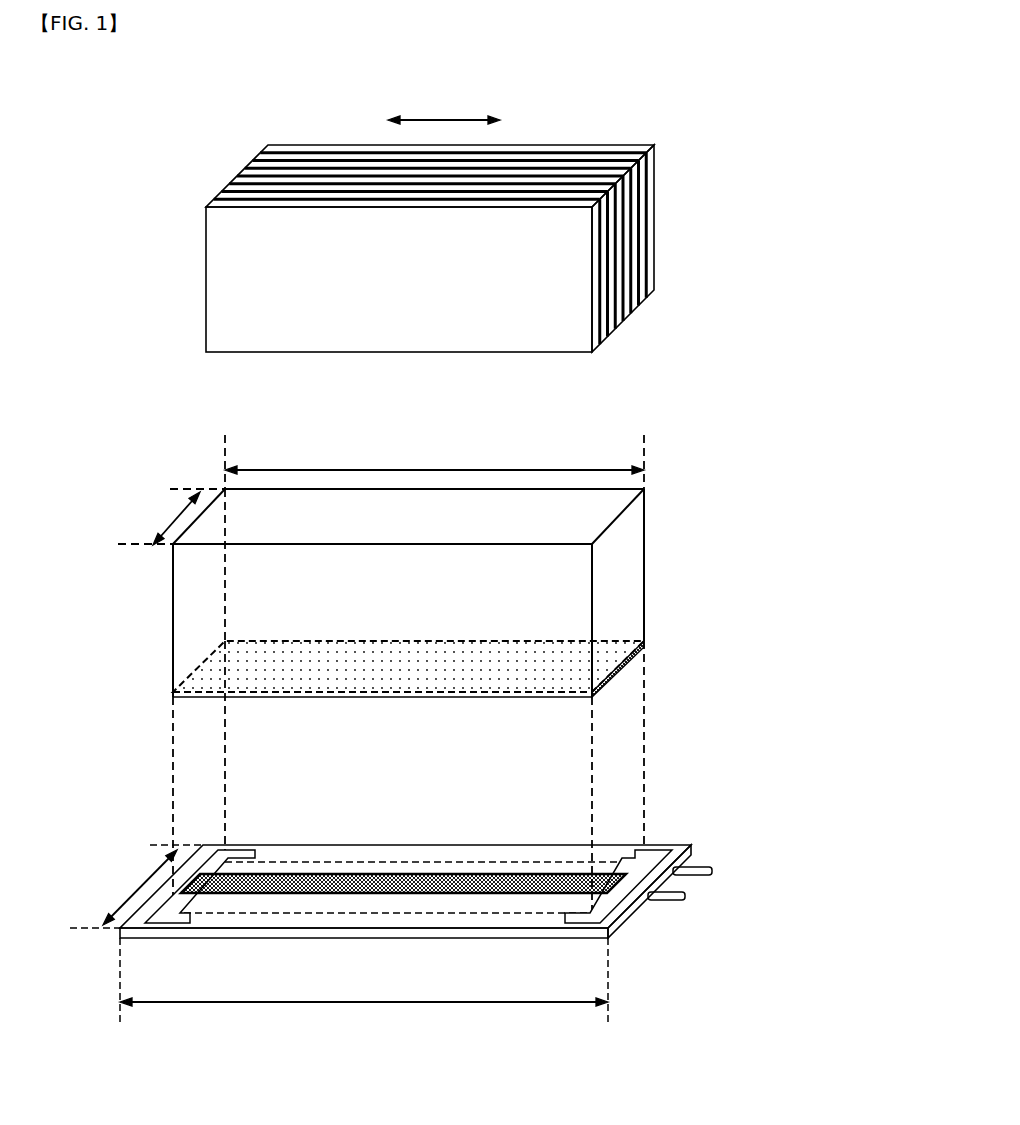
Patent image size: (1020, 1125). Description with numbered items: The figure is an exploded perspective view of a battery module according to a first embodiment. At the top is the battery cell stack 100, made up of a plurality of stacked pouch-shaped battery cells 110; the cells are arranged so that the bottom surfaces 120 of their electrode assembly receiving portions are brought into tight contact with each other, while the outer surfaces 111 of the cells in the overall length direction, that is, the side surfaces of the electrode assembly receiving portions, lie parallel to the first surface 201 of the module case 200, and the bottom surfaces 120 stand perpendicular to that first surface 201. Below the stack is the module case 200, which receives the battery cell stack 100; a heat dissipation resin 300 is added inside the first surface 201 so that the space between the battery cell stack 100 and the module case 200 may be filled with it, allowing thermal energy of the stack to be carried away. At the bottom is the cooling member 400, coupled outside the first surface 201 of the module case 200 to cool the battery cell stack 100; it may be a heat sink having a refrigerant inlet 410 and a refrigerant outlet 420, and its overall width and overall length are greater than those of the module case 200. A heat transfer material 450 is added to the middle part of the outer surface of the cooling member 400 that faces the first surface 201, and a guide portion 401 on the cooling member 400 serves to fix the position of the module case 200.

The battery cell stack 100 is at (515, 233).
The battery cells 110 is at (480, 214).
The outer surfaces of the pouch-shaped battery cells 111 is at (527, 143).
The bottom surfaces of electrode assembly receiving portions 120 is at (252, 318).
The module case 200 is at (423, 674).
The first surface of the module case 201 is at (254, 726).
The heat dissipation resin 300 is at (610, 657).
The cooling member 400 is at (448, 899).
The guide portion 401 is at (600, 918).
The refrigerant inlet 410 is at (712, 871).
The refrigerant outlet 420 is at (685, 896).
The heat transfer material 450 is at (358, 883).